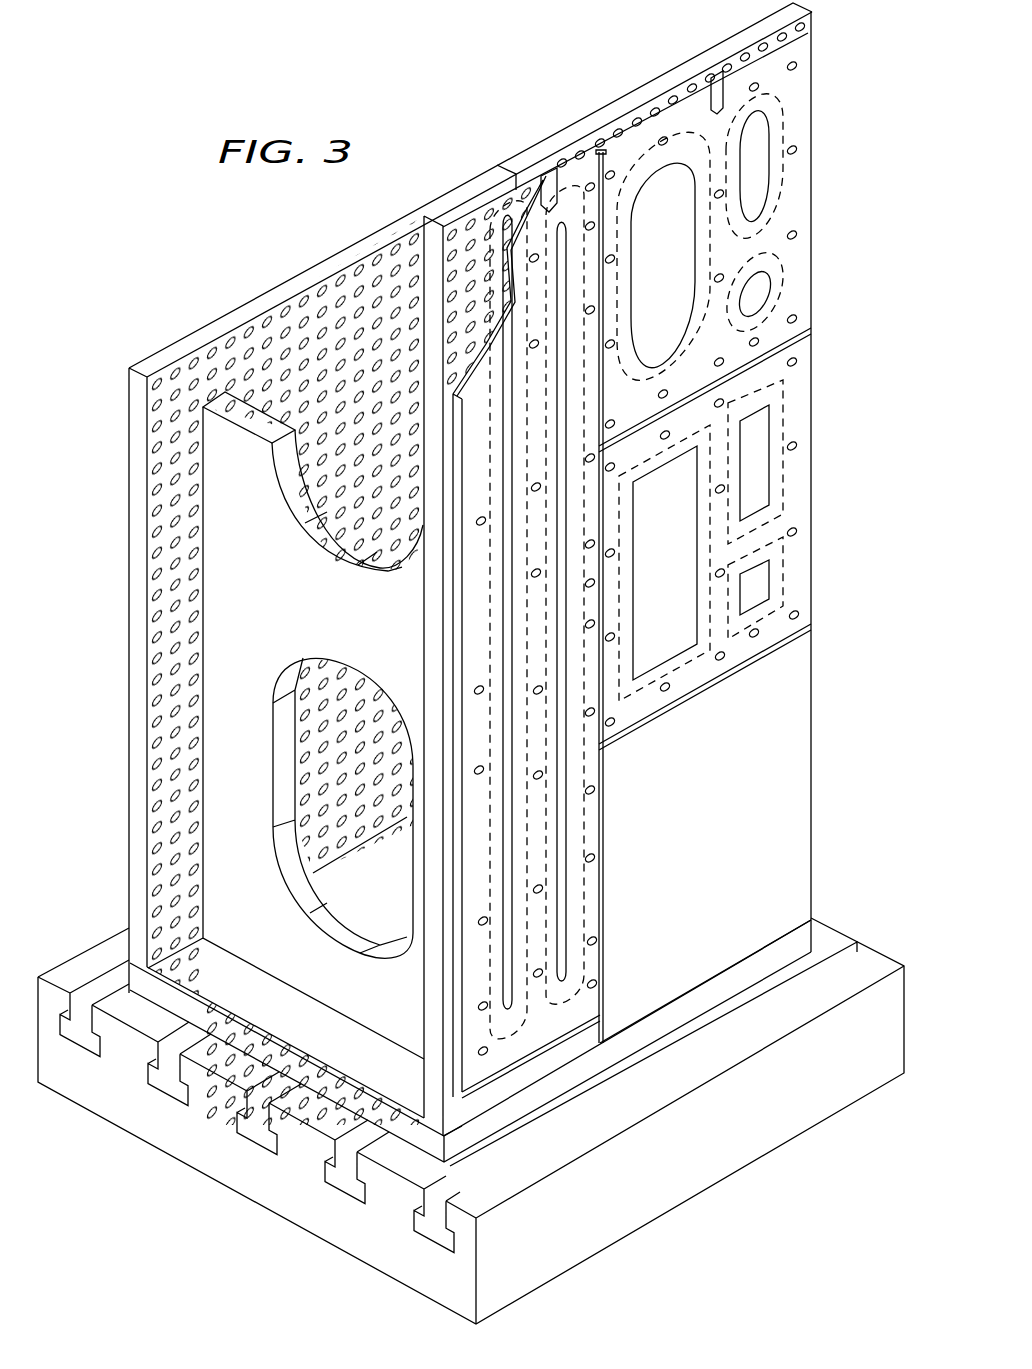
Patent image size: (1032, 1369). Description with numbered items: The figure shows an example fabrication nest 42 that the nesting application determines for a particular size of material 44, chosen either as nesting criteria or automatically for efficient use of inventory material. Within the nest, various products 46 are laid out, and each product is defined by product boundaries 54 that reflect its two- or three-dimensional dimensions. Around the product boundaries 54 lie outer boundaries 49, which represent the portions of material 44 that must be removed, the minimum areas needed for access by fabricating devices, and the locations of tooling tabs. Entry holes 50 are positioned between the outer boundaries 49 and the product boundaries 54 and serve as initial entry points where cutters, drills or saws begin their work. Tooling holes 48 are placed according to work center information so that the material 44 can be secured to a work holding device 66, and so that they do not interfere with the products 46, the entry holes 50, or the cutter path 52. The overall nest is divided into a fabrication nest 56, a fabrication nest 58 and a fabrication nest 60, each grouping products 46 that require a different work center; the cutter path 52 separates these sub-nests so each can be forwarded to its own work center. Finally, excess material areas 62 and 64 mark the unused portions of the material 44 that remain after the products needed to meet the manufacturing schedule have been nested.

The fabrication nest 42 is at (845, 811).
The material 44 is at (812, 721).
The products 46 is at (770, 296).
The tooling holes 48 is at (457, 214).
The outer boundaries 49 is at (728, 134).
The entry holes 50 is at (774, 118).
The cutter path 52 is at (606, 153).
The product boundaries 54 is at (774, 171).
The fabrication nest 56 is at (813, 53).
The fabrication nest 58 is at (813, 466).
The fabrication nest 60 is at (601, 809).
The excess material area 62 is at (813, 872).
The excess material area 64 is at (586, 1033).
The work holding device 66 is at (637, 96).